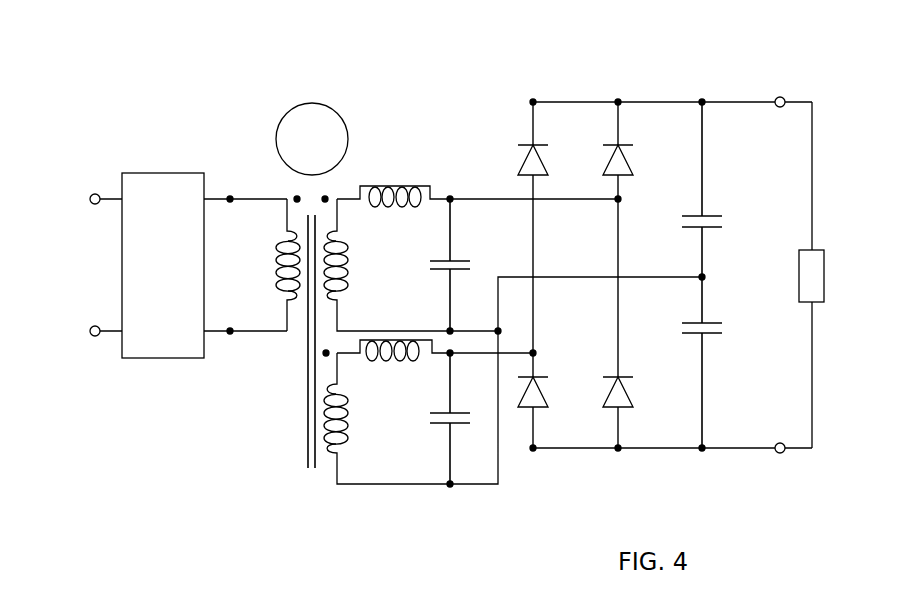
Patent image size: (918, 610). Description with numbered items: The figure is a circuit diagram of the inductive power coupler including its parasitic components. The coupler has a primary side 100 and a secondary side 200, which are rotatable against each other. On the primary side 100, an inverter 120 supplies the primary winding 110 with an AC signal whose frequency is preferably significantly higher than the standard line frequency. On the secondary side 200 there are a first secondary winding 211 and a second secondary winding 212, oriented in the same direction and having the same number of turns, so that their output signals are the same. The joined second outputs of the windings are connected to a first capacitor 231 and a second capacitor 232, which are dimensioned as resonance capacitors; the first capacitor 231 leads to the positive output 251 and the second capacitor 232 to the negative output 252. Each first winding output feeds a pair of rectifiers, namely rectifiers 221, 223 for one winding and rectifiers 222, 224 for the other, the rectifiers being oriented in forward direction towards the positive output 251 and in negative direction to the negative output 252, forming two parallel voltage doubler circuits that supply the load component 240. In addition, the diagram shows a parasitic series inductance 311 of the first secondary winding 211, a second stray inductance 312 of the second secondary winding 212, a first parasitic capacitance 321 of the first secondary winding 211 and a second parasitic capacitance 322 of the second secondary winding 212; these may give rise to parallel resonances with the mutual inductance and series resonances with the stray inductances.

The primary side 100 is at (212, 100).
The primary winding 110 is at (278, 245).
The inverter 120 is at (160, 197).
The secondary side 200 is at (413, 100).
The first secondary winding 211 is at (347, 282).
The second secondary winding 212 is at (347, 435).
The rectifier 221 is at (525, 163).
The rectifier 222 is at (627, 163).
The rectifier 223 is at (532, 393).
The rectifier 224 is at (627, 395).
The first capacitor 231 is at (712, 215).
The second capacitor 232 is at (712, 338).
The load component 240 is at (799, 278).
The positive output 251 is at (780, 108).
The negative output 252 is at (780, 442).
The parasitic series inductance 311 is at (403, 206).
The second stray inductance 312 is at (402, 362).
The first parasitic capacitance 321 is at (455, 259).
The second parasitic capacitance 322 is at (455, 411).